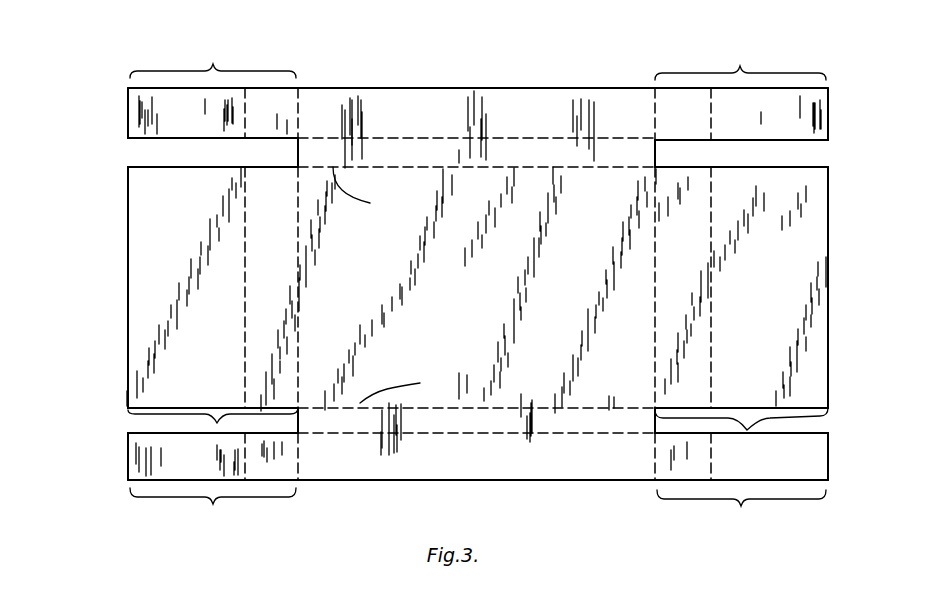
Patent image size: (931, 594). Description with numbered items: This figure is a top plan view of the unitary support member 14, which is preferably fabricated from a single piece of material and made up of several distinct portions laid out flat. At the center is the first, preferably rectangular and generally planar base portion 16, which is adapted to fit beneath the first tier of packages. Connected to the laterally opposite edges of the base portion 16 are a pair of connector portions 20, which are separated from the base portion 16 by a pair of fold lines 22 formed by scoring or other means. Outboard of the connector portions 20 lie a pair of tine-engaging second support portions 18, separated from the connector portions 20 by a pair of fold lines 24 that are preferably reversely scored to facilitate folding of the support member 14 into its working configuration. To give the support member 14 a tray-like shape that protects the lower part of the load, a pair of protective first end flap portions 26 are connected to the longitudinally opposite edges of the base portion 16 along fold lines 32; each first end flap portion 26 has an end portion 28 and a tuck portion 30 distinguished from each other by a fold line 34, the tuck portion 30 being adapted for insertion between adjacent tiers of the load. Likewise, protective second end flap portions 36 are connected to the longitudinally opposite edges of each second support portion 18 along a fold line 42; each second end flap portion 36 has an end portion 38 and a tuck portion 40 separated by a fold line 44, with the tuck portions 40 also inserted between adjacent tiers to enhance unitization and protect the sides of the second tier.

The support member 14 is at (576, 86).
The base portion 16 is at (456, 289).
The second support portions 18 is at (536, 122).
The connector portions 20 is at (489, 162).
The fold lines 22 is at (391, 285).
The fold lines 24 is at (337, 137).
The first end flap portions 26 is at (217, 426).
The end portion 28 is at (256, 264).
The tuck portion 30 is at (173, 244).
The fold lines 32 is at (300, 312).
The fold line 34 is at (245, 306).
The second end flap portions 36 is at (478, 284).
The end portion 38 is at (280, 122).
The tuck portion 40 is at (173, 120).
The fold line 42 is at (300, 106).
The fold line 44 is at (243, 118).